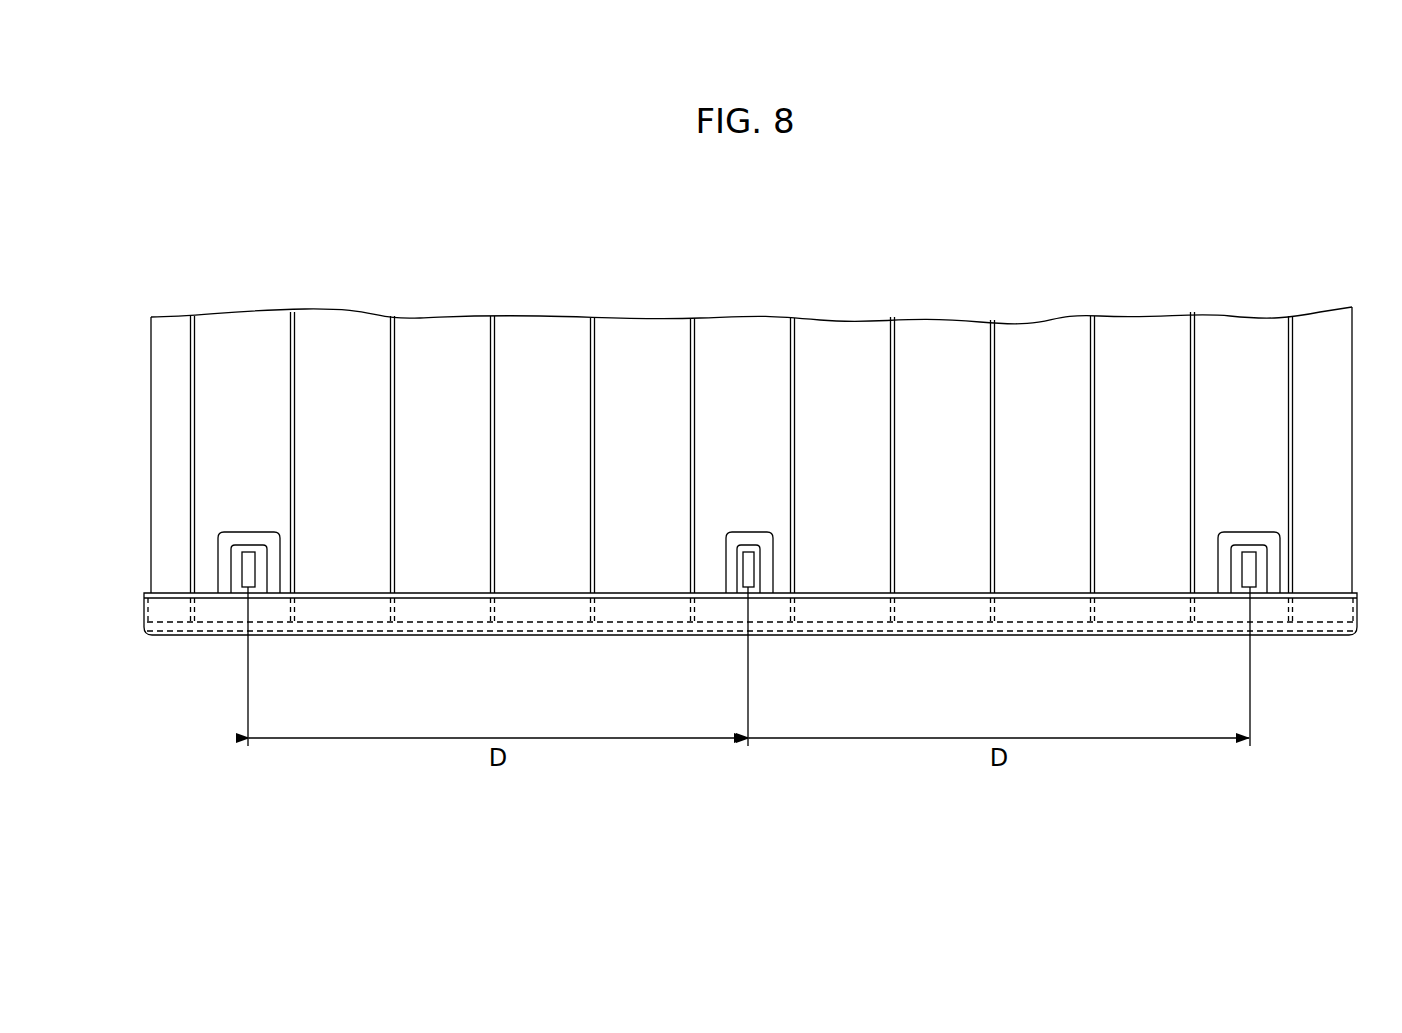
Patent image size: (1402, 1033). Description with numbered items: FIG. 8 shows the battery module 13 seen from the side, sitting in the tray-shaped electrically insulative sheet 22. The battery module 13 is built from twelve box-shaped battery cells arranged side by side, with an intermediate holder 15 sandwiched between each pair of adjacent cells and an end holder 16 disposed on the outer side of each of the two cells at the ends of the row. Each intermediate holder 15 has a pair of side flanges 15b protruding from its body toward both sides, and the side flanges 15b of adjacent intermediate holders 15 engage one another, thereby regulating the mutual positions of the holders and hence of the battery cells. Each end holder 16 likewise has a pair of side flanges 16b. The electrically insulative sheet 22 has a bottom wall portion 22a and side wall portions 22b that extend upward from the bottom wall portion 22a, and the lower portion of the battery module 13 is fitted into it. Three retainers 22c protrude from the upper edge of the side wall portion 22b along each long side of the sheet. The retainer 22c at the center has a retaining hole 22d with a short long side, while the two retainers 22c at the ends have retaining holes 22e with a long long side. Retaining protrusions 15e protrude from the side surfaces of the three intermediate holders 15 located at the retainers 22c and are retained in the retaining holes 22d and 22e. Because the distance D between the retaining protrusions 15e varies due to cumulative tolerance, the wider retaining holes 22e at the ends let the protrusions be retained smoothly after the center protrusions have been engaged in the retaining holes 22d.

The battery module 13 is at (1030, 262).
The intermediate holder 15 is at (427, 343).
The side flange 15b is at (622, 340).
The retaining protrusion 15e is at (253, 568).
The end holder 16 is at (148, 372).
The side flange 16b is at (158, 465).
The electrically insulative sheet 22 is at (212, 638).
The bottom wall portion 22a is at (445, 636).
The side wall portion 22b is at (945, 610).
The retainer 22c is at (223, 560).
The retaining hole 22d is at (745, 552).
The retaining hole 22e is at (253, 558).